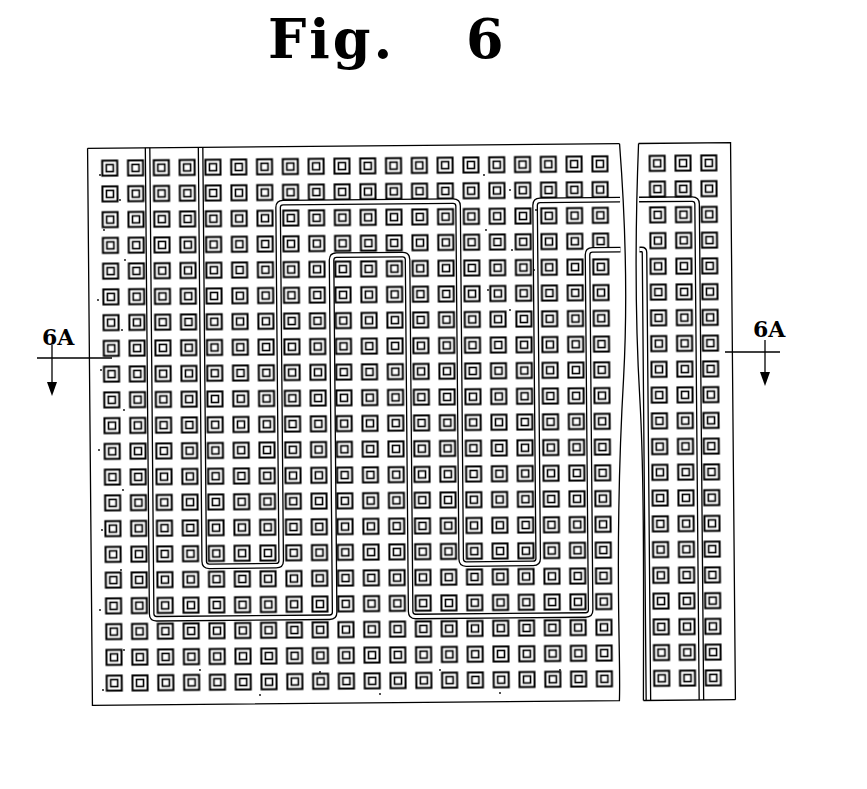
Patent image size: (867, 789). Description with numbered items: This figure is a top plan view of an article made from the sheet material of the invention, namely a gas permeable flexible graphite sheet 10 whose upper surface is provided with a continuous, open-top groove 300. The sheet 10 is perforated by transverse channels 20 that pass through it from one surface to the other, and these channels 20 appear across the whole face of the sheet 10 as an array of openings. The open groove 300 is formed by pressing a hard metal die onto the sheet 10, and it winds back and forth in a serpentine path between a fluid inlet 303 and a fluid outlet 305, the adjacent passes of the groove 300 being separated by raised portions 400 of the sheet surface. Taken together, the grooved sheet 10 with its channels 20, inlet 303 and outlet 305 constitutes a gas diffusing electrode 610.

The gas permeable flexible graphite sheet 10 is at (732, 250).
The transverse channels 20 is at (217, 150).
The continuous open groove 300 is at (163, 488).
The fluid inlet 303 is at (180, 147).
The fluid outlet 305 is at (671, 701).
The raised portions 400 is at (480, 205).
The gas diffusing electrode 610 is at (746, 298).